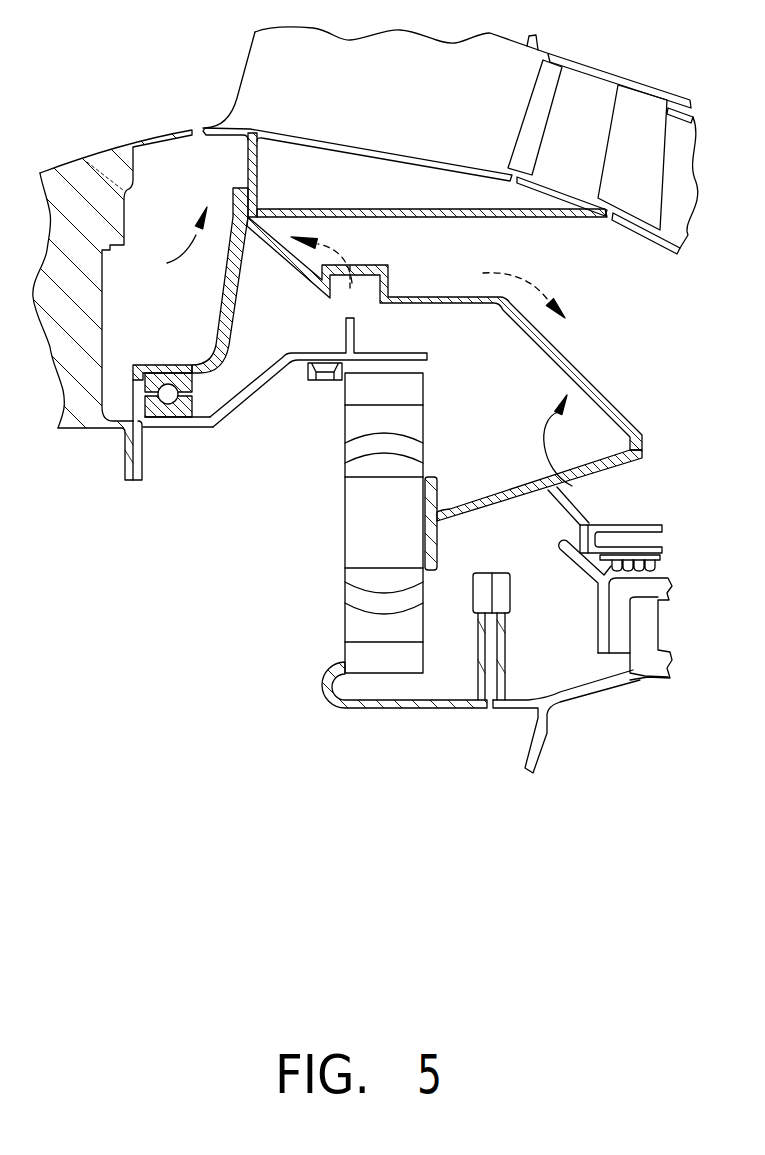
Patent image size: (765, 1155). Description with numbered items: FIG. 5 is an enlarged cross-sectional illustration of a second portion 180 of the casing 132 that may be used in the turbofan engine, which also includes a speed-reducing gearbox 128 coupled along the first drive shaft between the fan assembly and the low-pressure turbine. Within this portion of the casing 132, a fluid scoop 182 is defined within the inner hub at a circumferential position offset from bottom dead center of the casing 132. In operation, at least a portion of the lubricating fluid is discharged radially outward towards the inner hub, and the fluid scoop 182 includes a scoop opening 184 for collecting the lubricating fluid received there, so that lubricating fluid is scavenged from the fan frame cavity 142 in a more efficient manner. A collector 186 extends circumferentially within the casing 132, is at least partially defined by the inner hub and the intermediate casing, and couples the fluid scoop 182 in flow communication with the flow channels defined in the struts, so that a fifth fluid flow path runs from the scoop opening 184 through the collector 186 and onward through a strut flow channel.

The speed-reducing gearbox 128 is at (279, 601).
The casing 132 is at (584, 470).
The fan frame cavity 142 is at (199, 540).
The second portion 180 is at (178, 280).
The fluid scoop 182 is at (362, 287).
The scoop opening 184 is at (347, 263).
The collector 186 is at (546, 261).